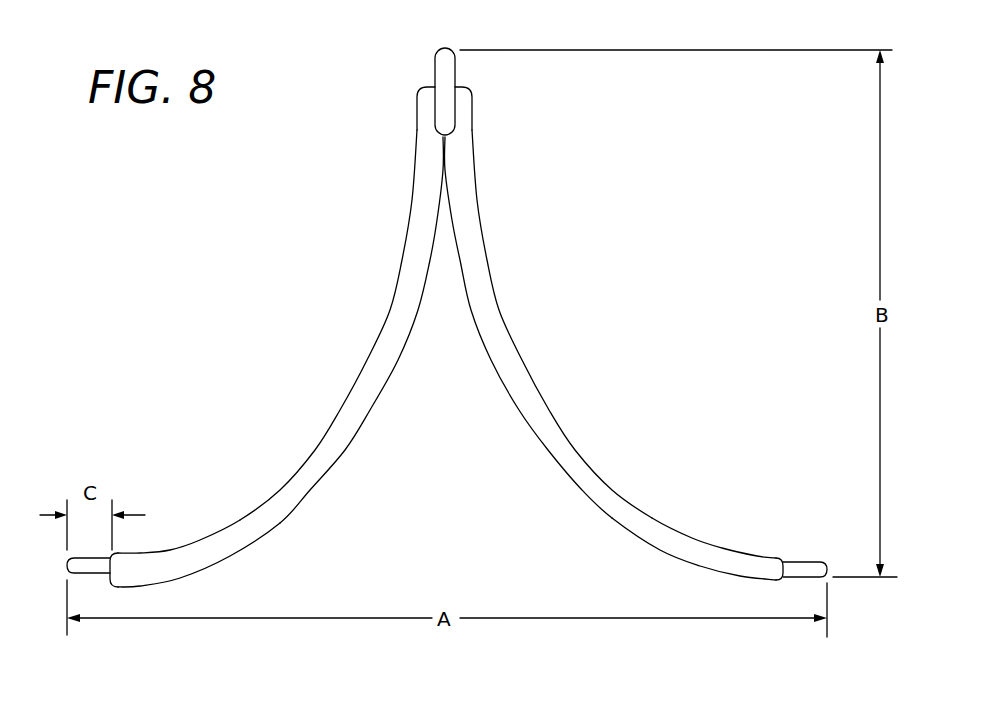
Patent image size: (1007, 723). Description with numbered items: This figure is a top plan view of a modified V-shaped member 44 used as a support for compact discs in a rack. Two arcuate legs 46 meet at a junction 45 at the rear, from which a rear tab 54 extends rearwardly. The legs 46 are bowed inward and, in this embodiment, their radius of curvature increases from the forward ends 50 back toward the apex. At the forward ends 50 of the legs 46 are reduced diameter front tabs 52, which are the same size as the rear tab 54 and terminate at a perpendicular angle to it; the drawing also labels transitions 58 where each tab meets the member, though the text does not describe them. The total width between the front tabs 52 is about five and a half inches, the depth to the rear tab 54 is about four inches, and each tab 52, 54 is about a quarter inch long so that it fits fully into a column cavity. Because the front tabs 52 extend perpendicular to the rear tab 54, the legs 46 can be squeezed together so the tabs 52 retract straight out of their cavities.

The V-shaped member 44 is at (313, 241).
The junction 45 is at (446, 118).
The legs 46 is at (365, 366).
The forward ends 50 is at (170, 515).
The front tabs 52 is at (92, 570).
The rear tab 54 is at (438, 52).
The rounded shoulder 58 is at (457, 87).